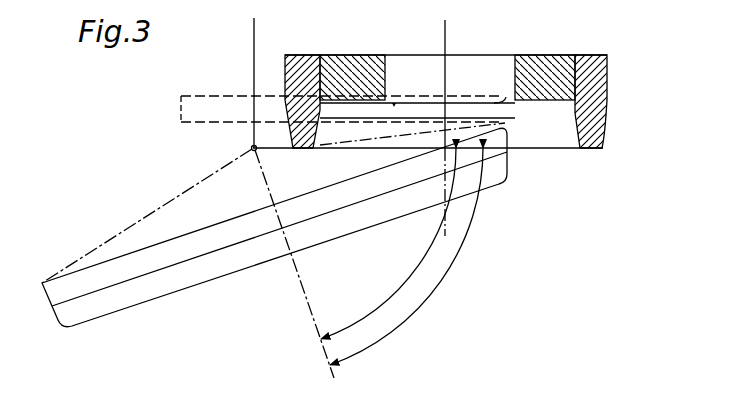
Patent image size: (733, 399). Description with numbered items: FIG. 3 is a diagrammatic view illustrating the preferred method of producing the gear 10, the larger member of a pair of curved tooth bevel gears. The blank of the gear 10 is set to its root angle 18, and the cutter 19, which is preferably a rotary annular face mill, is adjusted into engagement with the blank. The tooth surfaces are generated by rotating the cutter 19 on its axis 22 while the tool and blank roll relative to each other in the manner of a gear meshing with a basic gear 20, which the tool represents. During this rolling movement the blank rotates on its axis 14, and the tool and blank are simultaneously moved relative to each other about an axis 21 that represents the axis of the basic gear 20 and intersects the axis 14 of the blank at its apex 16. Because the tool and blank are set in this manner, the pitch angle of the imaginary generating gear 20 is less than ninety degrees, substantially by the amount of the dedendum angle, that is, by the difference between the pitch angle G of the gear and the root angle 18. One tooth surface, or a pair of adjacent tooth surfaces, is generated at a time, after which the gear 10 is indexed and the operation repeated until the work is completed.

The gear 10 is at (165, 288).
The axis 14 is at (299, 278).
The common apex 16 is at (251, 147).
The root angle 18 is at (413, 273).
The cutter 19 is at (602, 92).
The basic gear 20 is at (181, 108).
The axis 21 is at (256, 42).
The axis 22 is at (447, 42).
The pitch angle of the gear G is at (447, 267).